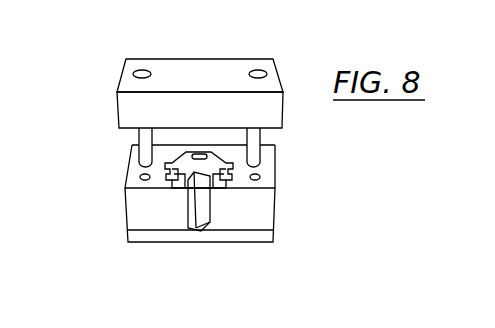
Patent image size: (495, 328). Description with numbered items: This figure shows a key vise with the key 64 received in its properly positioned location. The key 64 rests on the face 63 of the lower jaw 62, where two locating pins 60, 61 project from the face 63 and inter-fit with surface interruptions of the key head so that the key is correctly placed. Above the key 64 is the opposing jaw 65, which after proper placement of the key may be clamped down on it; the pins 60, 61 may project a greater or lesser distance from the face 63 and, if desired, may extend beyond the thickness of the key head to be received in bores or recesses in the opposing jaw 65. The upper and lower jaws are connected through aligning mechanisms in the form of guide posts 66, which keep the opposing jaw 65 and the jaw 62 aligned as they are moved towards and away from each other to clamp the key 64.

The pin 60 is at (171, 180).
The pin 61 is at (229, 178).
The jaw 62 is at (273, 210).
The face 63 is at (265, 175).
The key 64 is at (189, 228).
The opposing jaw 65 is at (190, 68).
The guide posts 66 is at (140, 152).